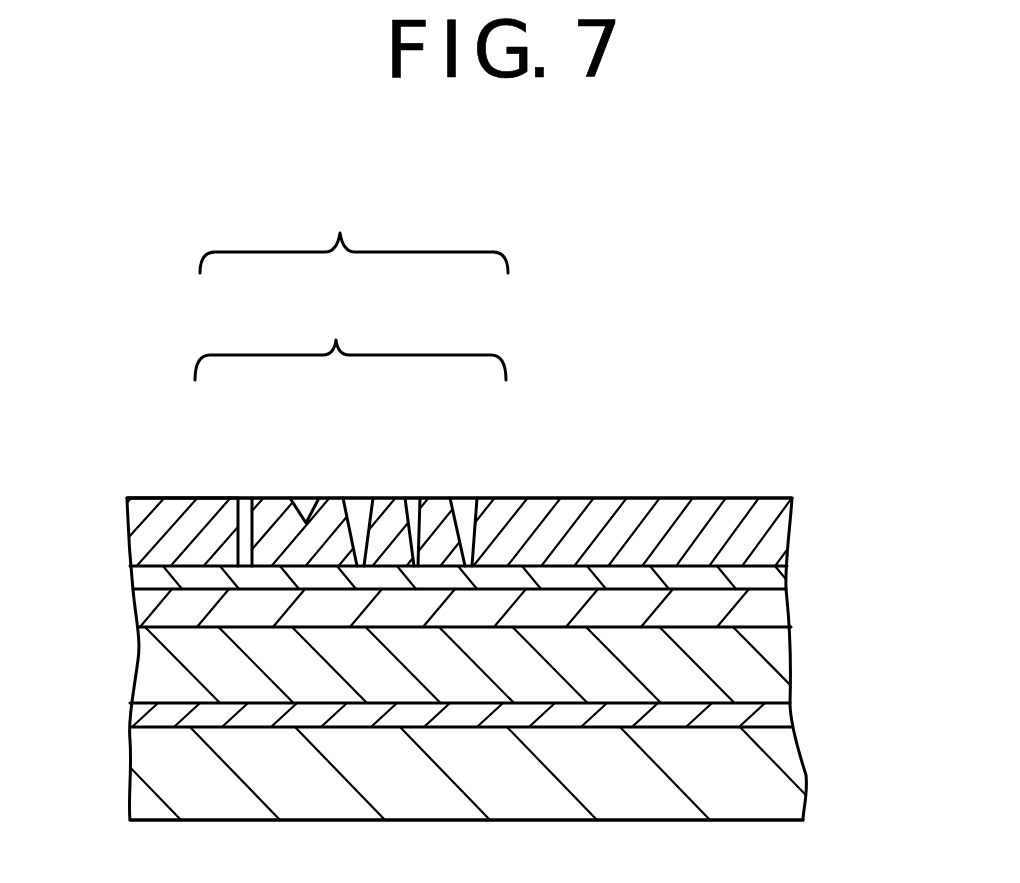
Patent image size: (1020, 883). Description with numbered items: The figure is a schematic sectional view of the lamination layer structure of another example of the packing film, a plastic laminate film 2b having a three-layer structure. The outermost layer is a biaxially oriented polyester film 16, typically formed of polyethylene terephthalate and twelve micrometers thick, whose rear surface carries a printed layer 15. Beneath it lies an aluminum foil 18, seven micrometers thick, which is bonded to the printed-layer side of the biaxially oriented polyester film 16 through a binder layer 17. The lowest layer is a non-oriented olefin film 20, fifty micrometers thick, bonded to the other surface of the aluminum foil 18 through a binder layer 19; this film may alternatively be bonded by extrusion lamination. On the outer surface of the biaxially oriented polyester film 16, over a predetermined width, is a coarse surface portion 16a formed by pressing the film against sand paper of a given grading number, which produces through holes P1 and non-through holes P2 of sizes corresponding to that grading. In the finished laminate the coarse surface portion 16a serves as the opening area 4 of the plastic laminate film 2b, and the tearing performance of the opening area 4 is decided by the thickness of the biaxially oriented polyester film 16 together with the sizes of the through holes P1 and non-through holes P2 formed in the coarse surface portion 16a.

The opening area 4 is at (354, 228).
The coarse surface portion 16a is at (350, 335).
The plastic laminate film 2b is at (146, 487).
The through holes P1 is at (465, 505).
The non-through holes P2 is at (309, 498).
The biaxially oriented polyester film 16 is at (778, 538).
The printed layer 15 is at (770, 584).
The binder layer 17 is at (775, 614).
The aluminum foil 18 is at (780, 664).
The binder layer 19 is at (778, 717).
The non-oriented olefin film 20 is at (772, 798).